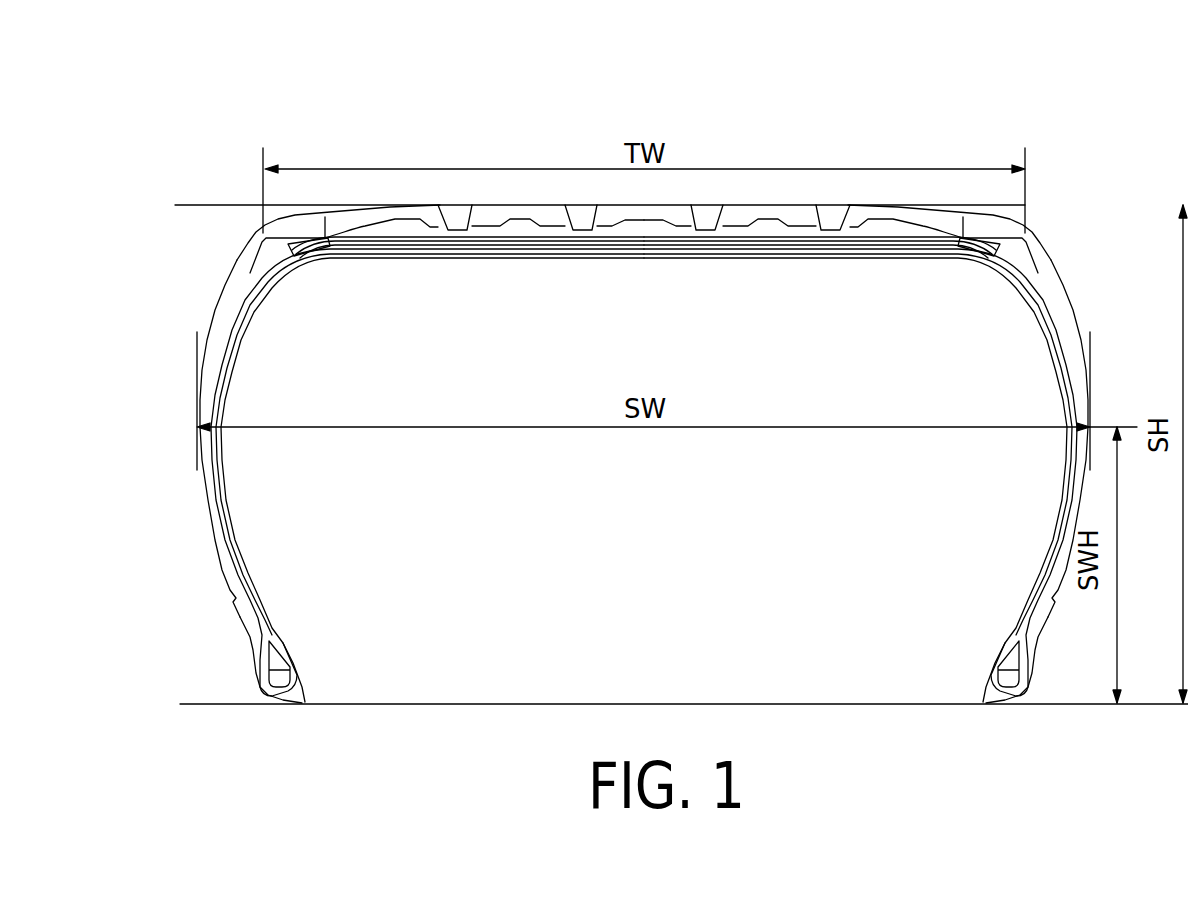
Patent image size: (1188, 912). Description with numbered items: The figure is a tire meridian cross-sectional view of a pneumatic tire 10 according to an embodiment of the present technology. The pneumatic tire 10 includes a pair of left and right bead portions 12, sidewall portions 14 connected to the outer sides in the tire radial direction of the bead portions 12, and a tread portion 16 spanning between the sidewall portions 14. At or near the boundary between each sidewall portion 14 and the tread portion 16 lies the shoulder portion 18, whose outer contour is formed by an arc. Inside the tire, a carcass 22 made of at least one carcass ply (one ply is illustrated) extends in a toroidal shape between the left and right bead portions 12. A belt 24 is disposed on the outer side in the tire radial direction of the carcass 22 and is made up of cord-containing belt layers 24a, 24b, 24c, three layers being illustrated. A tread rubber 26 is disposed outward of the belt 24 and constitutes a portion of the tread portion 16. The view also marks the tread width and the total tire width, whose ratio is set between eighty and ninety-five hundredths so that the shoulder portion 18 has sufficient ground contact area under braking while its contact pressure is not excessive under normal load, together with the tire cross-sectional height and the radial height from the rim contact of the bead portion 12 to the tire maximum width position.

The pneumatic tire 10 is at (250, 100).
The bead portion 12 is at (262, 665).
The sidewall portion 14 is at (205, 483).
The tread portion 16 is at (508, 210).
The shoulder portion 18 is at (258, 238).
The carcass 22 is at (258, 300).
The belt 24 is at (603, 322).
The belt layer 24a is at (447, 250).
The belt layer 24b is at (490, 243).
The belt layer 24c is at (527, 243).
The tread rubber 26 is at (675, 213).